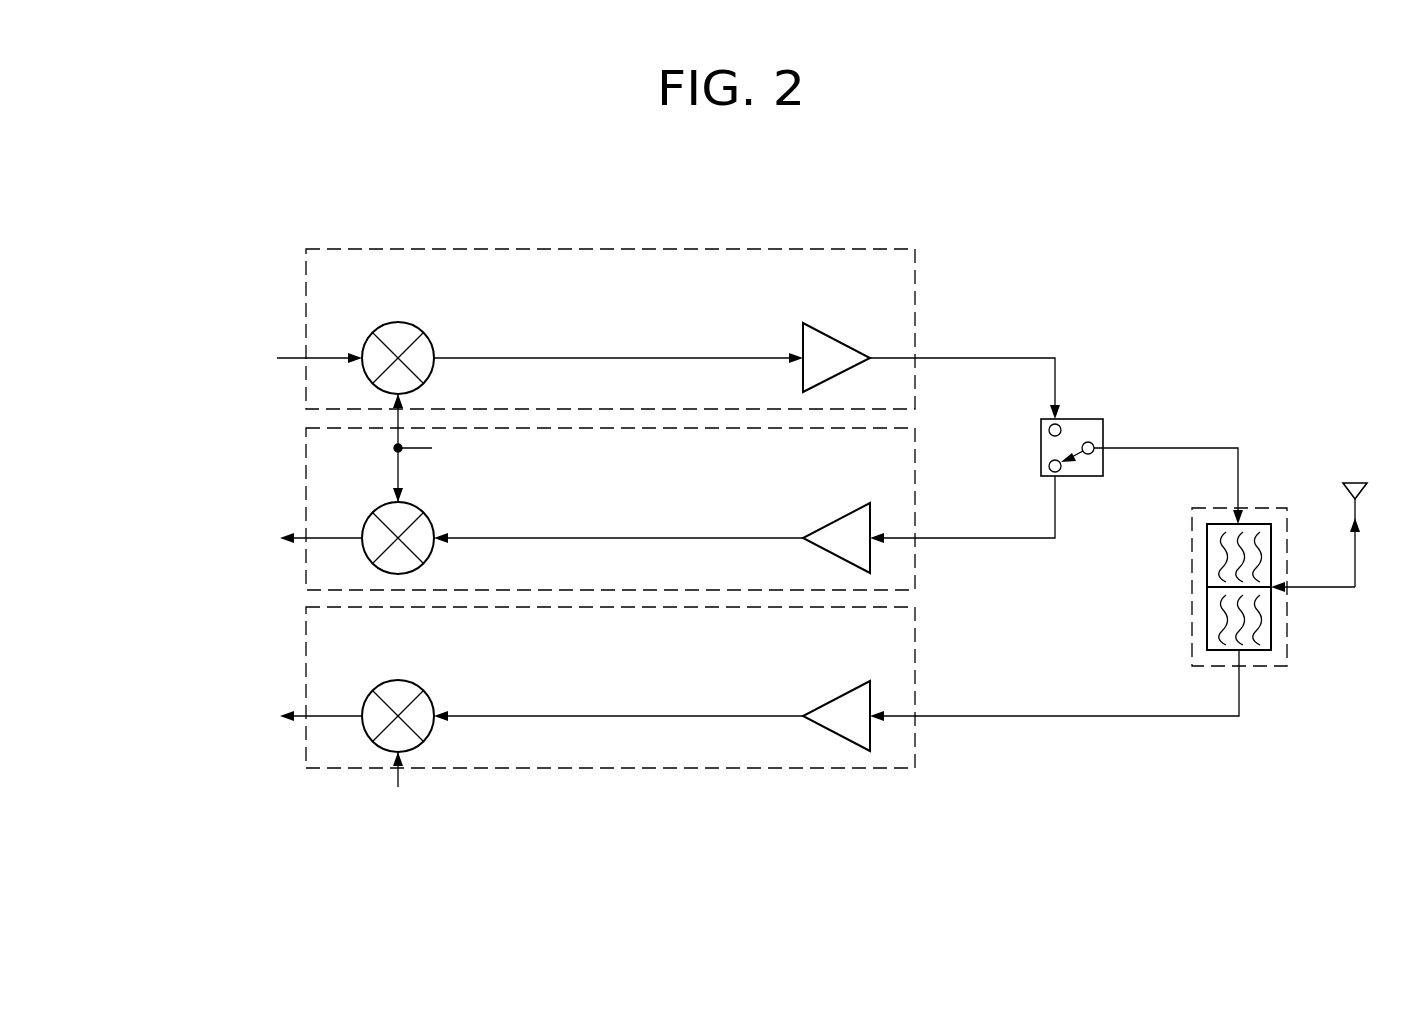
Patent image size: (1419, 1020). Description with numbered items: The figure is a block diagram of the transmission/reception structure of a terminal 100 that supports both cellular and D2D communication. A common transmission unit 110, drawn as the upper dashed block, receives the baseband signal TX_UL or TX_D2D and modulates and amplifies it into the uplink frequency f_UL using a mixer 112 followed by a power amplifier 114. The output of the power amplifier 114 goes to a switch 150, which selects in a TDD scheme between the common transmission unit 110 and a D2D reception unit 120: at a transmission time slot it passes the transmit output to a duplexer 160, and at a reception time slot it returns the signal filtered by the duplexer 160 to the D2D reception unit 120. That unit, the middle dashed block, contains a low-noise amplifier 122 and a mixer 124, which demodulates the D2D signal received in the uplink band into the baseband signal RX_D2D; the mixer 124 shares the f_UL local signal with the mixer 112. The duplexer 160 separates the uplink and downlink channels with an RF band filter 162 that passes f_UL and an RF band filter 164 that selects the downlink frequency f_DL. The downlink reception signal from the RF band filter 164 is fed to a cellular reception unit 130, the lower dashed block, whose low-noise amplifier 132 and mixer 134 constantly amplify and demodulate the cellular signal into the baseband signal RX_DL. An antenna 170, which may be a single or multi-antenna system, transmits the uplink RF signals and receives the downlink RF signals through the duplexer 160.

The terminal 100 is at (1154, 226).
The common transmission unit 110 is at (915, 278).
The mixer 112 is at (398, 322).
The power amplifier 114 is at (835, 336).
The D2D reception unit 120 is at (915, 458).
The low-noise amplifier 122 is at (785, 516).
The mixer 124 is at (368, 520).
The cellular reception unit 130 is at (915, 633).
The low-noise amplifier 132 is at (785, 694).
The mixer 134 is at (432, 694).
The switch 150 is at (1080, 411).
The duplexer 160 is at (1258, 502).
The RF band filter 162 is at (1207, 556).
The RF band filter 164 is at (1207, 619).
The antenna 170 is at (1355, 481).